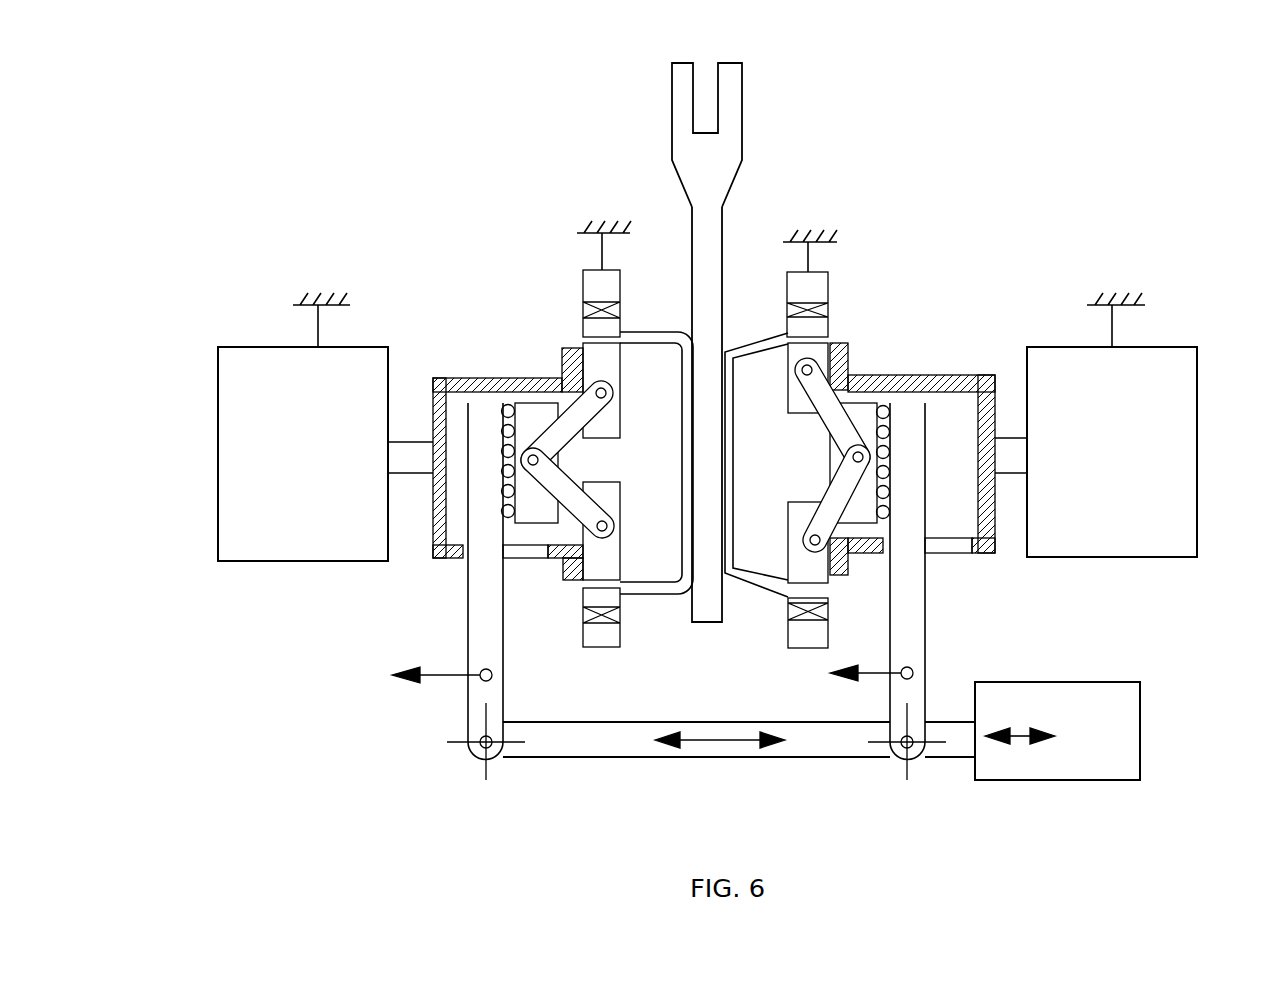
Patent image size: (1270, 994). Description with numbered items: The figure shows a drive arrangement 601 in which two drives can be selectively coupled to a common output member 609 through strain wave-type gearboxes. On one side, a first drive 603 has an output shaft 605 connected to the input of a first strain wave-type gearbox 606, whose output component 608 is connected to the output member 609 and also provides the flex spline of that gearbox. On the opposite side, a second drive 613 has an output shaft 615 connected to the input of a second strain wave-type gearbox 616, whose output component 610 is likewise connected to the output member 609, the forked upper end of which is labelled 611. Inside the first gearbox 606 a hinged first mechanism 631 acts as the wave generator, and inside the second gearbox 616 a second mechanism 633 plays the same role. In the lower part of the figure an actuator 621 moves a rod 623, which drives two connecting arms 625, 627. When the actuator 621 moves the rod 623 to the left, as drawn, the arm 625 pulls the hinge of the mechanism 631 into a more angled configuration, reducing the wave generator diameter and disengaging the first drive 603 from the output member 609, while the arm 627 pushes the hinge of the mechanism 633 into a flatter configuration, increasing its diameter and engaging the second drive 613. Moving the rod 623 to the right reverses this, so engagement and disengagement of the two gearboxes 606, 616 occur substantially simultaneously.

The drive arrangement 601 is at (893, 152).
The first drive 603 is at (218, 347).
The output shaft 605 is at (413, 476).
The first strain wave-type gearbox 606 is at (555, 378).
The output component 608 is at (657, 331).
The output member 609 is at (735, 187).
The output component 610 is at (778, 612).
The fork end of output shaft 611 is at (740, 65).
The second drive 613 is at (1197, 347).
The output shaft 615 is at (1002, 437).
The second strain wave-type gearbox 616 is at (856, 366).
The actuator 621 is at (1065, 781).
The rod 623 is at (790, 758).
The connecting arm 625 is at (505, 690).
The connecting arm 627 is at (928, 610).
The first mechanism 631 is at (612, 468).
The second mechanism 633 is at (808, 478).